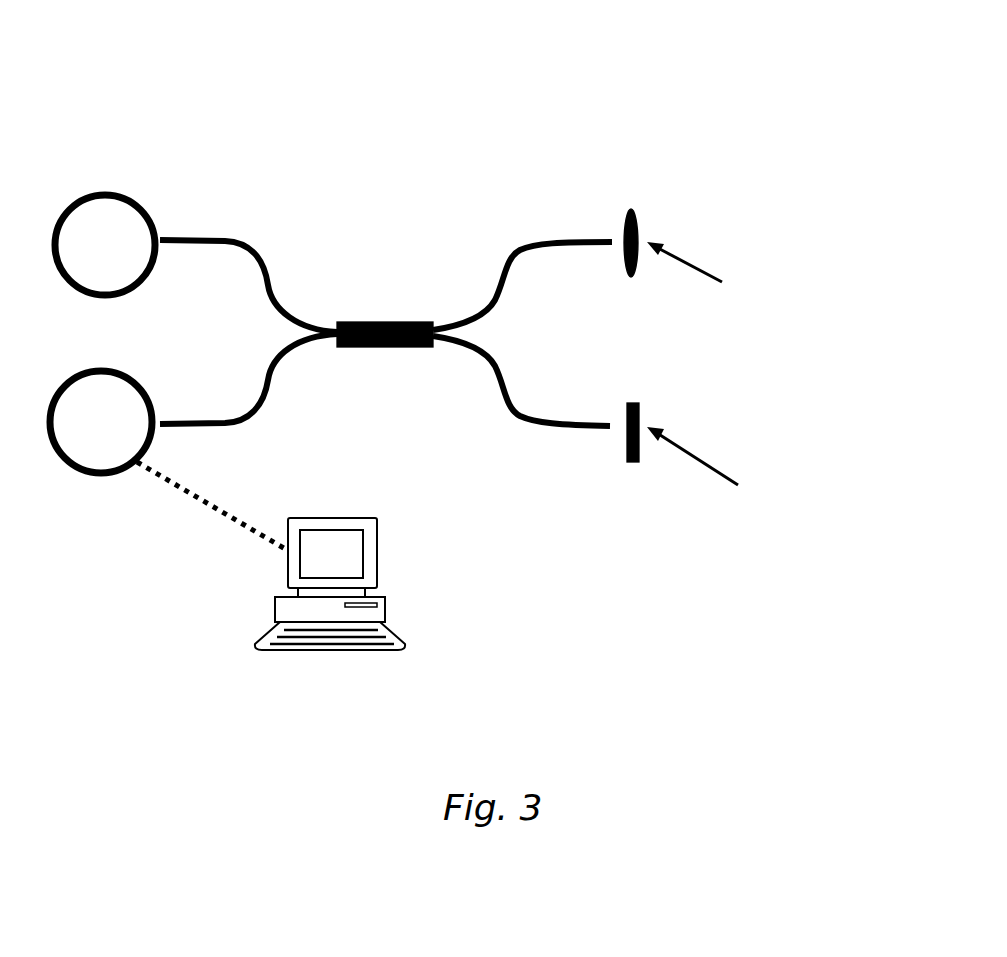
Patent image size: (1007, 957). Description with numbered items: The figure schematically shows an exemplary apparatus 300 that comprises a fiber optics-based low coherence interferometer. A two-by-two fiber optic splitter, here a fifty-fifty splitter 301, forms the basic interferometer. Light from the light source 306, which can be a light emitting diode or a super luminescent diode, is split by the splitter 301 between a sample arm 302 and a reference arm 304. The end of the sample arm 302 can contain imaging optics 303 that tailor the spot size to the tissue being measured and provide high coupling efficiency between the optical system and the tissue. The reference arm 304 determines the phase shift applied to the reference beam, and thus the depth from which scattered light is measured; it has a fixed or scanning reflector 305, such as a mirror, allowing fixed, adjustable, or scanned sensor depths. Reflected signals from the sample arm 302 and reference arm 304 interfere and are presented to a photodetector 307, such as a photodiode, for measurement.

The apparatus 300 is at (380, 148).
The 50/50 splitter 301 is at (375, 344).
The sample arm 302 is at (527, 250).
The imaging optics 303 is at (637, 222).
The reference arm 304 is at (508, 402).
The reflector 305 is at (640, 413).
The light source 306 is at (150, 212).
The photodetector 307 is at (138, 382).